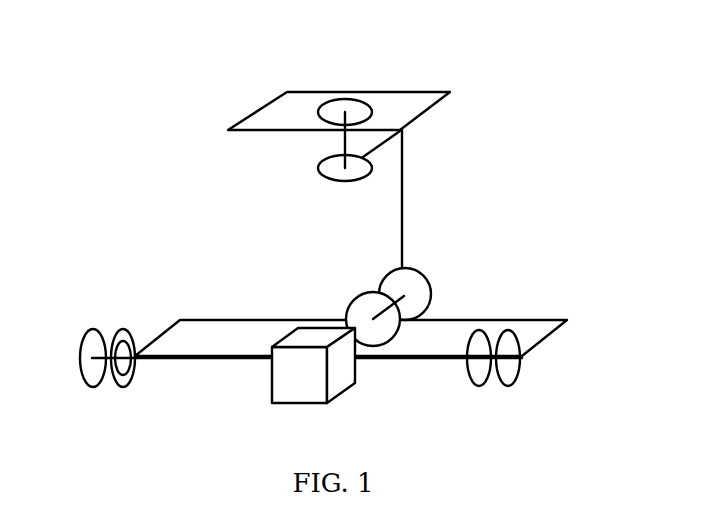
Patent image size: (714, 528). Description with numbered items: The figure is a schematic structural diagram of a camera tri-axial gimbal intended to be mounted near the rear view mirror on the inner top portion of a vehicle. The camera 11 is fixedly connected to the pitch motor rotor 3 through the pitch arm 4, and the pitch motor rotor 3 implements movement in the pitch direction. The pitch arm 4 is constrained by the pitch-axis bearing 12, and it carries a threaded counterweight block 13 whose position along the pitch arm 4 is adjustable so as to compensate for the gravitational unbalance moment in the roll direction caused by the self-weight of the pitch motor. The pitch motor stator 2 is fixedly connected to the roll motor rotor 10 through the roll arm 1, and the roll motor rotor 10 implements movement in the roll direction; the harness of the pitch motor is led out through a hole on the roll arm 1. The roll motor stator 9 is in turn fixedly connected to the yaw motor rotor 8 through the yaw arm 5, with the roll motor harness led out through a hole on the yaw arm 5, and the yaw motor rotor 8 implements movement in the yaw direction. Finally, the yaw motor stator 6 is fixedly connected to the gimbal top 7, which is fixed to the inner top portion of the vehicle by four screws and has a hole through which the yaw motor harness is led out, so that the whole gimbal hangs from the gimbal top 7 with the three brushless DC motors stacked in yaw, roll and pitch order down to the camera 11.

The roll arm 1 is at (538, 326).
The pitch motor stator 2 is at (508, 343).
The pitch motor rotor 3 is at (482, 343).
The pitch arm 4 is at (435, 358).
The yaw arm 5 is at (448, 55).
The yaw motor stator 6 is at (330, 115).
The gimbal top 7 is at (263, 117).
The yaw motor rotor 8 is at (330, 175).
The roll motor stator 9 is at (390, 287).
The roll motor rotor 10 is at (358, 307).
The camera 11 is at (310, 370).
The pitch-axis bearing 12 is at (120, 343).
The counterweight block 13 is at (93, 342).